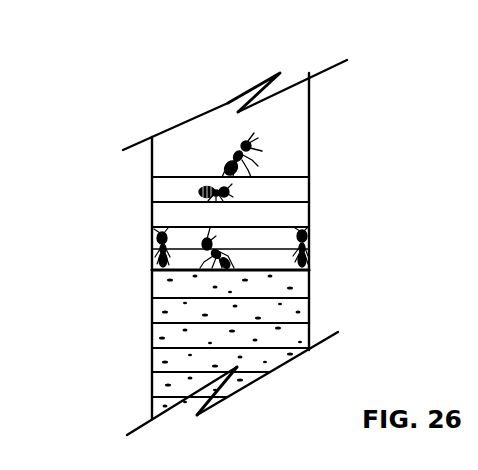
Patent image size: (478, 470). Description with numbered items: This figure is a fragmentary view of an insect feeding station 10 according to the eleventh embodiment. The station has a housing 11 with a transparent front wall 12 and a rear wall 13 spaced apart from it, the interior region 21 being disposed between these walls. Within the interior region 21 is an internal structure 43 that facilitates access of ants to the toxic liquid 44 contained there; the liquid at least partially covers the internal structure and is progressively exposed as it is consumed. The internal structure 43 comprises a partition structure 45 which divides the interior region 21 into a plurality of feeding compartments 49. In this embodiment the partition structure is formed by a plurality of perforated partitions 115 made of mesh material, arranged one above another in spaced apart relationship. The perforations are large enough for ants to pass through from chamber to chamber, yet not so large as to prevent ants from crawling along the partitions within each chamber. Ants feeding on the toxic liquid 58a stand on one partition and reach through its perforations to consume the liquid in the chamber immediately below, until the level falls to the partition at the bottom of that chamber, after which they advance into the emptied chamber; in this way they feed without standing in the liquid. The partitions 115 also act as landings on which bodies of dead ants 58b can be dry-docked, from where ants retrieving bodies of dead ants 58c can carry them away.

The insect feeding station 10 is at (113, 164).
The housing 11 is at (310, 130).
The front wall 12 is at (311, 209).
The rear wall 13 is at (162, 212).
The interior region 21 is at (290, 165).
The internal structure 43 is at (283, 162).
The toxic liquid 44 is at (160, 332).
The partition structure 45 is at (191, 175).
The feeding compartments 49 is at (162, 192).
The ants feeding on the toxic liquid 58a is at (308, 240).
The bodies of dead ants 58b is at (228, 191).
The ants retrieving bodies of dead ants 58c is at (236, 158).
The perforated partitions 115 is at (273, 200).